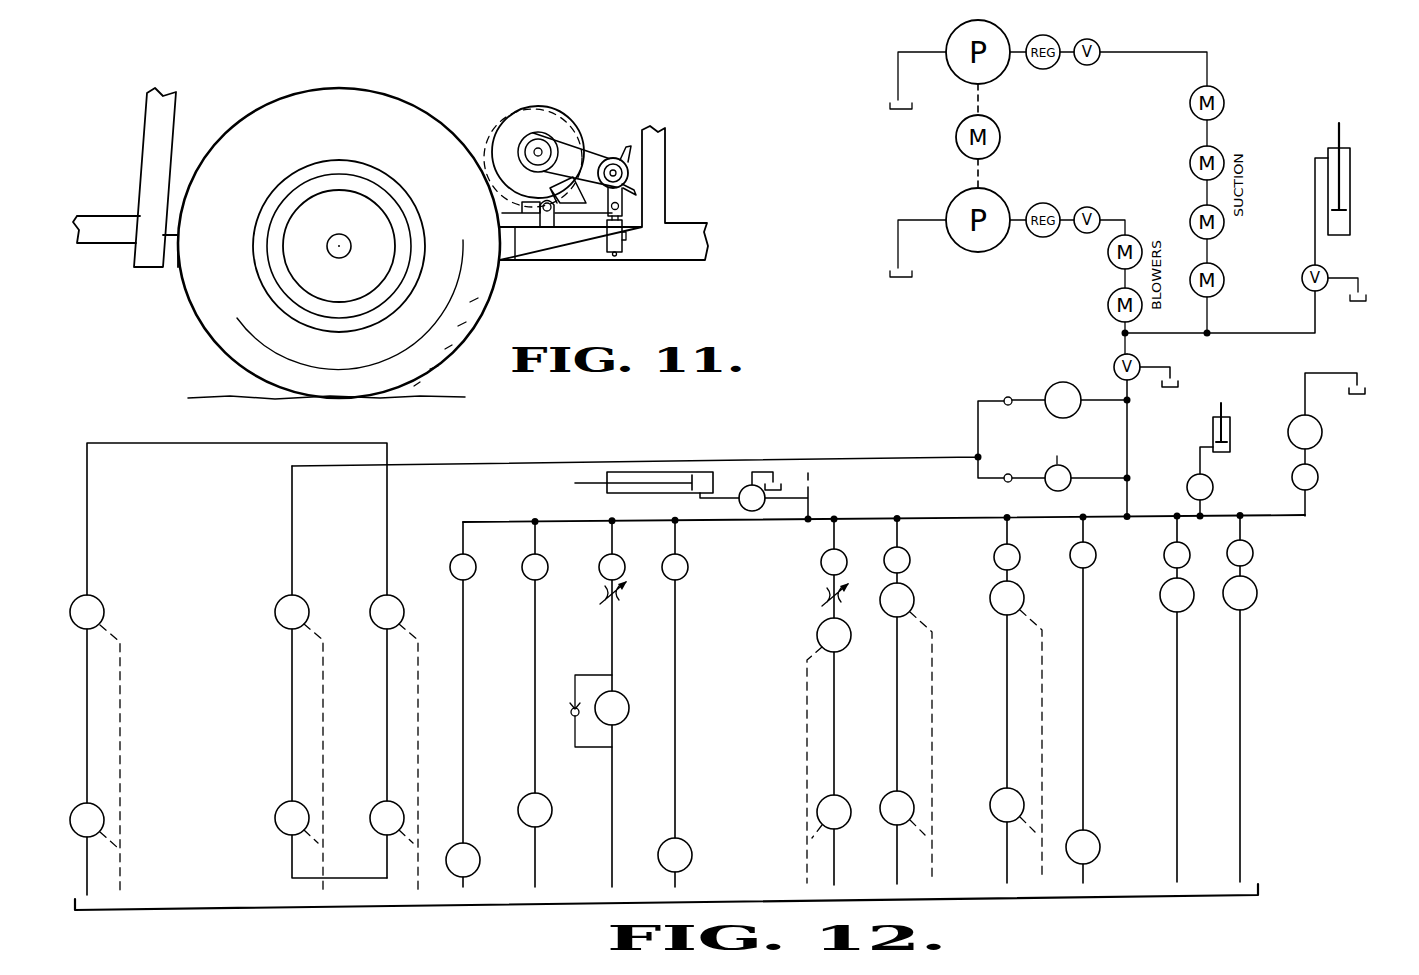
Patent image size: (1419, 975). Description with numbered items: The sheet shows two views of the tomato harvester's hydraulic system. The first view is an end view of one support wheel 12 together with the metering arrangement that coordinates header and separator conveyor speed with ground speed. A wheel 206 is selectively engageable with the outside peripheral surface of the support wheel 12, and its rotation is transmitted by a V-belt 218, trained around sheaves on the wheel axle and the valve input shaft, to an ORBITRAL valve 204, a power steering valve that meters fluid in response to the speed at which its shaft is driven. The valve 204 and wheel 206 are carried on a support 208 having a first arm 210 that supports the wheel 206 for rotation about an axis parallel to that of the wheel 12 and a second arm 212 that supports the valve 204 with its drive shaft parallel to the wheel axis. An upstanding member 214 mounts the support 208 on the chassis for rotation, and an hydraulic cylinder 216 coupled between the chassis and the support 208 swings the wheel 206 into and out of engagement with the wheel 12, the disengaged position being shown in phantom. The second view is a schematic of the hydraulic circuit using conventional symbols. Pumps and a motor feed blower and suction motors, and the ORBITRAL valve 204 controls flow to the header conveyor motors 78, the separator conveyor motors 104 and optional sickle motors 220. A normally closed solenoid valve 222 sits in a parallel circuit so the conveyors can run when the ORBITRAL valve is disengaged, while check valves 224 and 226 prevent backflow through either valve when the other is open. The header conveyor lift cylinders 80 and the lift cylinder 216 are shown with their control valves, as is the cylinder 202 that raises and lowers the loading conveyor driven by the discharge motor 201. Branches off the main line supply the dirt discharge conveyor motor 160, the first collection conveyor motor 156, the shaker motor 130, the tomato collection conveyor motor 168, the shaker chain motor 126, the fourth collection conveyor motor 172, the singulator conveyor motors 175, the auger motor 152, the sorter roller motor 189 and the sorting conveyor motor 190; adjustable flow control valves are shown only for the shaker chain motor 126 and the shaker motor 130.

In FIG. 11, the support wheel 12 is at (450, 358).
In FIG. 11, the ORBITRAL valve 204 is at (633, 163).
In FIG. 12, the ORBITRAL valve 204 is at (1057, 415).
In FIG. 11, the wheel 206 is at (550, 108).
In FIG. 11, the support 208 is at (577, 208).
In FIG. 11, the first arm 210 is at (520, 176).
In FIG. 11, the second arm 212 is at (622, 198).
In FIG. 11, the upstanding member 214 is at (541, 216).
In FIG. 11, the hydraulic cylinder 216 is at (606, 243).
In FIG. 12, the hydraulic cylinder 216 is at (1213, 428).
In FIG. 11, the V-belt 218 is at (593, 148).
In FIG. 12, the double-acting hydraulic cylinder 202 is at (1351, 177).
In FIG. 12, the check valve 224 is at (1006, 396).
In FIG. 12, the check valve 226 is at (1005, 482).
In FIG. 12, the solenoid valve 222 is at (1065, 488).
In FIG. 12, the hydraulic motor 201 is at (1322, 432).
In FIG. 12, the double-acting hydraulic cylinder 80 is at (610, 491).
In FIG. 12, the sickle motor 220 is at (103, 600).
In FIG. 12, the hydraulic motor 78 is at (276, 609).
In FIG. 12, the hydraulic motor 104 is at (380, 596).
In FIG. 12, the hydraulic motor 130 is at (622, 694).
In FIG. 12, the hydraulic motor 156 is at (548, 822).
In FIG. 12, the hydraulic motor 160 is at (480, 863).
In FIG. 12, the hydraulic motor 168 is at (690, 848).
In FIG. 12, the hydraulic motor 126 is at (817, 636).
In FIG. 12, the hydraulic motor 172 is at (911, 591).
In FIG. 12, the singulator conveyor motor 175 is at (993, 603).
In FIG. 12, the hydraulic motor 152 is at (1097, 836).
In FIG. 12, the hydraulic motor 189 is at (1162, 602).
In FIG. 12, the hydraulic motor 190 is at (1257, 598).